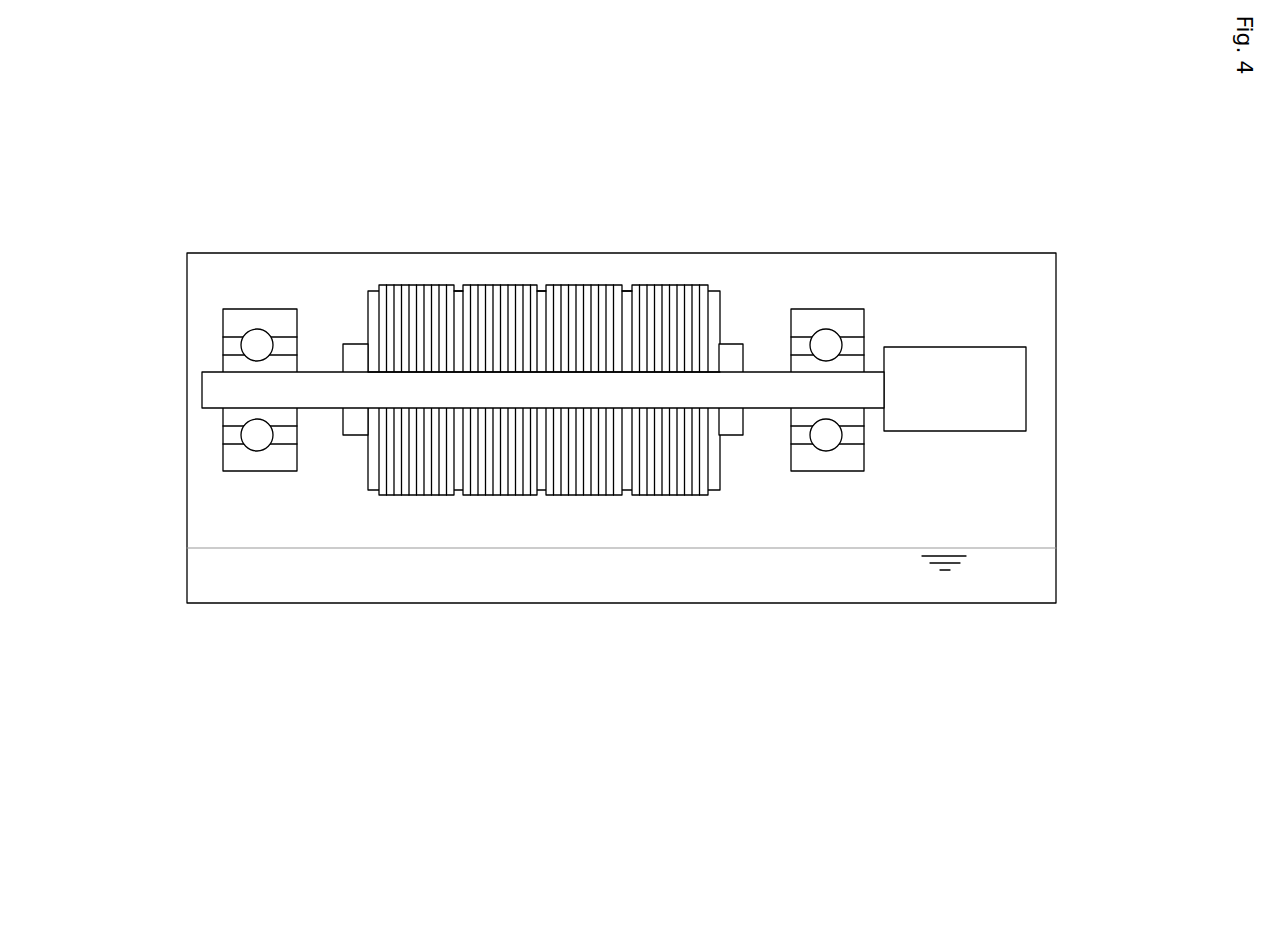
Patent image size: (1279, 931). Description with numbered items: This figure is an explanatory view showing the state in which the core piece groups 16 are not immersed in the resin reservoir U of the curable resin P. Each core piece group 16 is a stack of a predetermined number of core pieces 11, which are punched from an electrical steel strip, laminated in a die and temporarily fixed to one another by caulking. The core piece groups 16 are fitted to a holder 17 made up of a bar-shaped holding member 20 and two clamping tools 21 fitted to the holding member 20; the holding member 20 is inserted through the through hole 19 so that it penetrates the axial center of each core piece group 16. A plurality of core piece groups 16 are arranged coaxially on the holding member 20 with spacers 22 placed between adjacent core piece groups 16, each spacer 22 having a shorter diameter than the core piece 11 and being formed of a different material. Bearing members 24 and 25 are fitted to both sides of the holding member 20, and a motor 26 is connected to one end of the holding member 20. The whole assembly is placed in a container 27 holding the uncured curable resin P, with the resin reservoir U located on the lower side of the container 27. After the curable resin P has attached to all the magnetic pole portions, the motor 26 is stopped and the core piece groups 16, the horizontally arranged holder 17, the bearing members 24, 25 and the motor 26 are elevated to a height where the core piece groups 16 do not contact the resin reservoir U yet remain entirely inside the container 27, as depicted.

The core piece 11 is at (518, 497).
The core piece group 16 is at (575, 502).
The holder 17 is at (325, 448).
The through hole 19 is at (407, 372).
The holding member 20 is at (315, 388).
The clamping tool 21 is at (355, 357).
The spacer 22 is at (626, 298).
The bearing member 24 is at (238, 358).
The bearing member 25 is at (817, 328).
The motor 26 is at (962, 380).
The container 27 is at (265, 245).
The resin reservoir U is at (228, 540).
The curable resin P is at (880, 587).